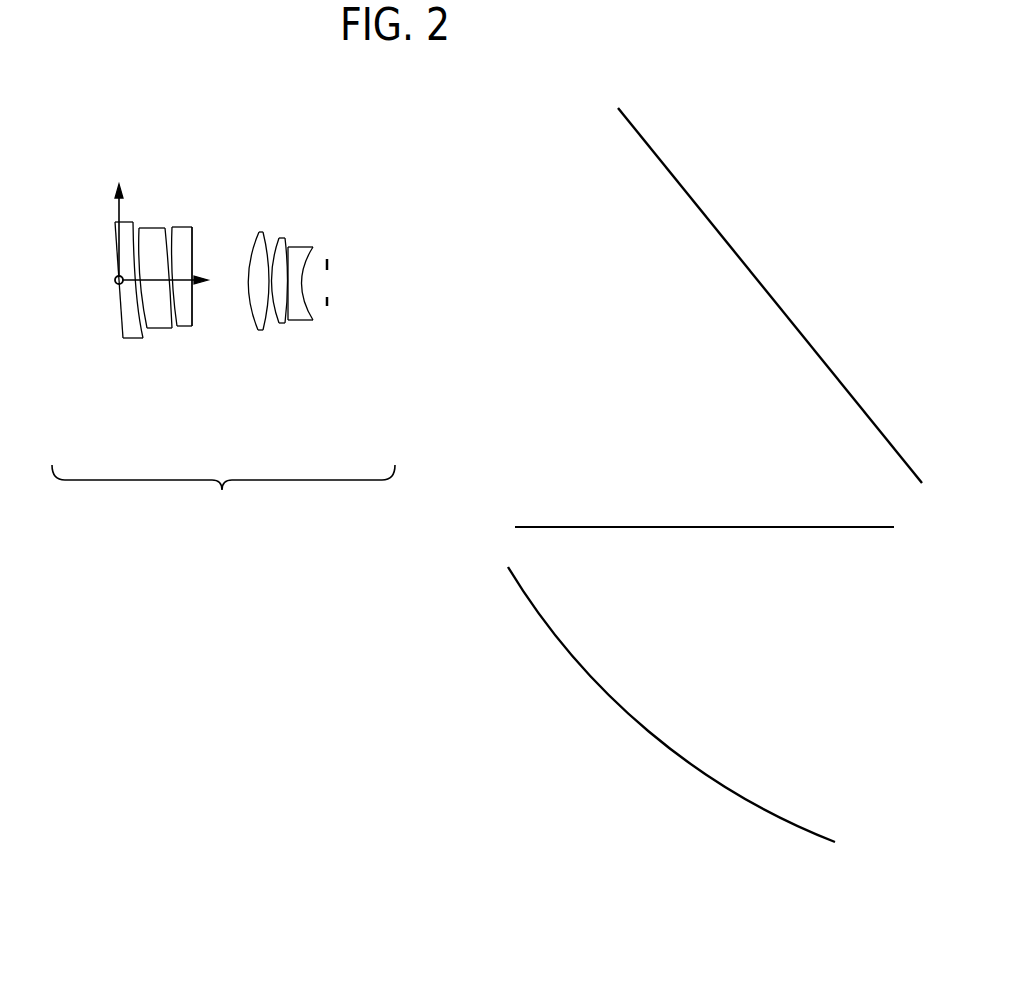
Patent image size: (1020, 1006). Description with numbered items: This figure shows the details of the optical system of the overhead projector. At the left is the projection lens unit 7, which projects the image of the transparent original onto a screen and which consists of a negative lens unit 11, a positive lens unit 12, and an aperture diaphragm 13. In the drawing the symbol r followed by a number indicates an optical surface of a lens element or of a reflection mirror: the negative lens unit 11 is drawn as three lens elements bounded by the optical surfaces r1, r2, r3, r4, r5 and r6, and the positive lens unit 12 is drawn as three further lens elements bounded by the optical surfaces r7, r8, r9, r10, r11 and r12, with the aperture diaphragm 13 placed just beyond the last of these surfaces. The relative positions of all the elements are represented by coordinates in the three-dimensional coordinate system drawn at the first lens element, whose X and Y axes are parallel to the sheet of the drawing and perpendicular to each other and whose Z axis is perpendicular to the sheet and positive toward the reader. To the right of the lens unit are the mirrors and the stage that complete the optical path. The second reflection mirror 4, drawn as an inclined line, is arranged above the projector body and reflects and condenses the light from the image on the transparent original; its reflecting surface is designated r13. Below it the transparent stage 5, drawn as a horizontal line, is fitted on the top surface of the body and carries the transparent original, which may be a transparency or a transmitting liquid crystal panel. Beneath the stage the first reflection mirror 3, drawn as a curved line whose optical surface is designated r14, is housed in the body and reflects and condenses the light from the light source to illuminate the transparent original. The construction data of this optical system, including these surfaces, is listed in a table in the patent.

The first reflection mirror 3 is at (671, 704).
The second reflection mirror 4 is at (737, 243).
The transparent stage 5 is at (603, 525).
The projection lens unit 7 is at (225, 326).
The negative lens unit 11 is at (134, 282).
The positive lens unit 12 is at (300, 316).
The aperture diaphragm 13 is at (335, 262).
The optical surface r1 is at (114, 238).
The optical surface r2 is at (136, 224).
The optical surface r3 is at (142, 330).
The optical surface r4 is at (168, 330).
The optical surface r5 is at (173, 227).
The optical surface r6 is at (190, 230).
The optical surface r7 is at (252, 320).
The optical surface r8 is at (276, 326).
The optical surface r9 is at (276, 240).
The optical surface r10 is at (288, 246).
The optical surface r11 is at (290, 312).
The optical surface r12 is at (312, 316).
The optical surface r13 is at (812, 338).
The optical surface r14 is at (603, 685).